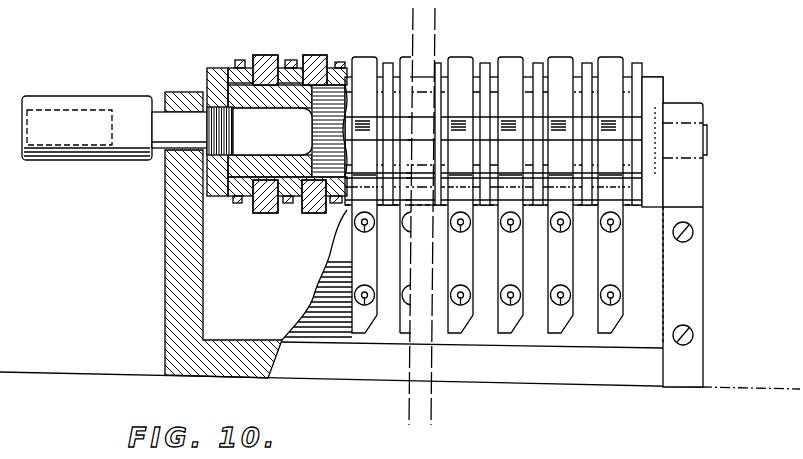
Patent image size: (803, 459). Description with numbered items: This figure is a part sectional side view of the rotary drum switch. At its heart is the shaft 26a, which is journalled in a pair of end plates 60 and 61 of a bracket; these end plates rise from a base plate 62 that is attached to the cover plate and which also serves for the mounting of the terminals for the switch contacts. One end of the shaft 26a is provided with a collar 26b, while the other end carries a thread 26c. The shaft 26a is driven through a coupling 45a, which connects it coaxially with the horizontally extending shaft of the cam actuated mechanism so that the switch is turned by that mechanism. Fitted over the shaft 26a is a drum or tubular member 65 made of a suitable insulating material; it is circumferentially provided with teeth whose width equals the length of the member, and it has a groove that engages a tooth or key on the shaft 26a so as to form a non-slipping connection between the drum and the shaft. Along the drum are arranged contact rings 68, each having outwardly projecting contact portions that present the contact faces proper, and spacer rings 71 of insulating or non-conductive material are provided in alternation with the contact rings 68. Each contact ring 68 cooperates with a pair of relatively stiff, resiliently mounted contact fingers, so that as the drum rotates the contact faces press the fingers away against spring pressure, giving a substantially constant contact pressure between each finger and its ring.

The coupling 45a is at (47, 95).
The shaft 26a is at (163, 150).
The thread 26c is at (190, 94).
The drum or tubular member 65 is at (288, 102).
The contact rings 68 is at (264, 55).
The spacer rings 71 is at (292, 60).
The collar 26b is at (660, 112).
The end plate 60 is at (172, 281).
The end plate 61 is at (692, 282).
The base plate 62 is at (552, 379).